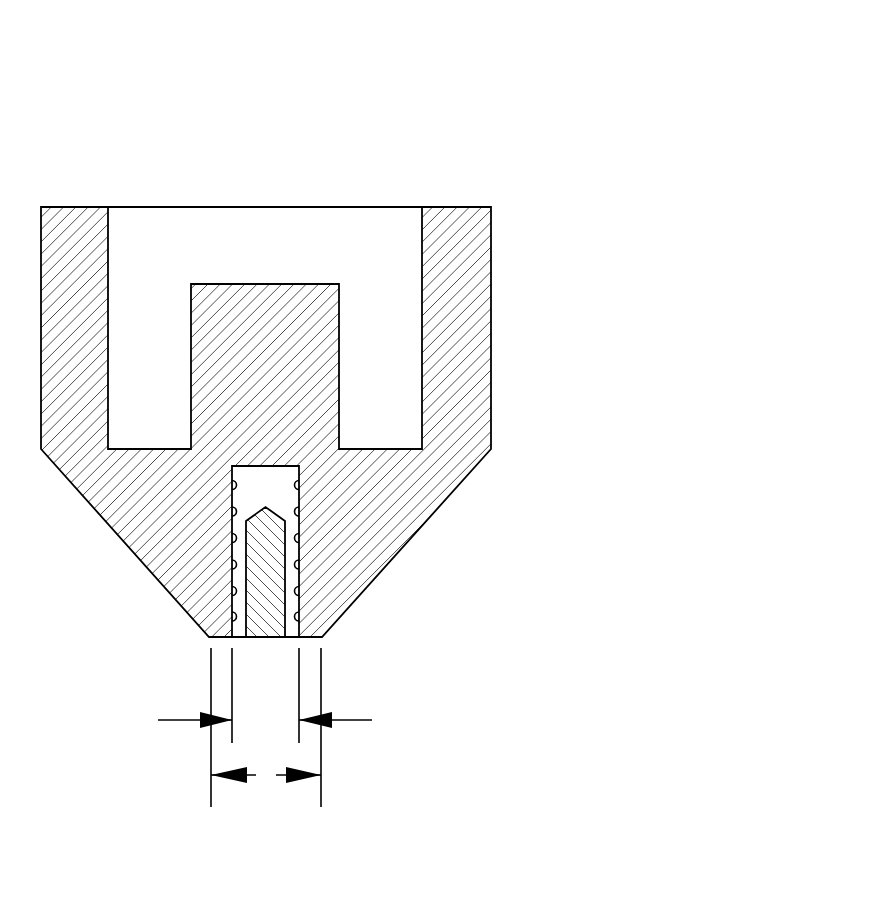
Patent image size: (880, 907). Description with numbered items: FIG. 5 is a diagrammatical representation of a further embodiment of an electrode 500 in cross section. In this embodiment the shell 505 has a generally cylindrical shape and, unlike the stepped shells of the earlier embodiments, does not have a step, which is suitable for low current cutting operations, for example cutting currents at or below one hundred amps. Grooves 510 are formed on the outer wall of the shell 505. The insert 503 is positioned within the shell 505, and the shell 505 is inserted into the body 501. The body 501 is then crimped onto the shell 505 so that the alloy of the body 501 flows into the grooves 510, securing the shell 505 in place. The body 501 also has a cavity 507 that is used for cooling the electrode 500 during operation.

The electrode 500 is at (400, 158).
The body 501 is at (491, 321).
The insert 503 is at (263, 637).
The shell 505 is at (250, 492).
The cavity 507 is at (265, 237).
The grooves 510 is at (297, 537).